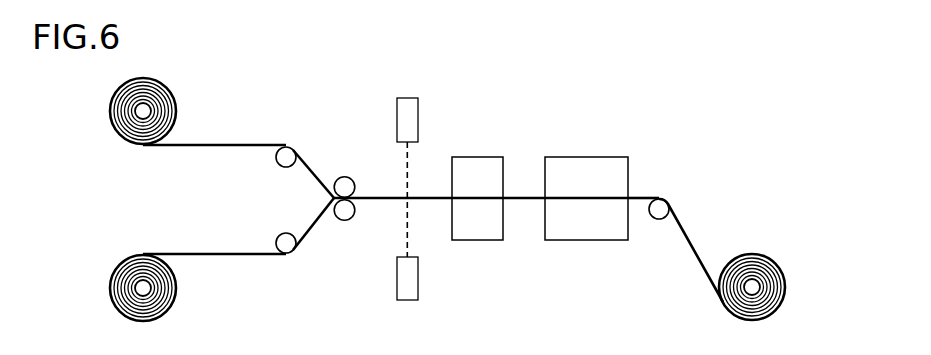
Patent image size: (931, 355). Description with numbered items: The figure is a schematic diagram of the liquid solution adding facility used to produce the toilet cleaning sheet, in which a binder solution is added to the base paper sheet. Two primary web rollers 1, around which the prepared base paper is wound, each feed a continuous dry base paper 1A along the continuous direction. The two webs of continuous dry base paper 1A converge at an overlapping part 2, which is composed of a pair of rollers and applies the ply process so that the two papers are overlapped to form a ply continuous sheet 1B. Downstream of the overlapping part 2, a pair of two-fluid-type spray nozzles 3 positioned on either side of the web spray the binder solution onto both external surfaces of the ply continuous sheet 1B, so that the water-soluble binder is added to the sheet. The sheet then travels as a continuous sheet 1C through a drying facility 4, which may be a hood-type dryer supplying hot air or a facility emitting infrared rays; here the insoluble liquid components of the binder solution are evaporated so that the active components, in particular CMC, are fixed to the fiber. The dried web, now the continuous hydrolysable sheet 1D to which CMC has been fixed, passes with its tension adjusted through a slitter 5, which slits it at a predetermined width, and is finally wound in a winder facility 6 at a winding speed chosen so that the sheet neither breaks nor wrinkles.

The primary web roller 1 is at (116, 100).
The continuous dry base paper 1A is at (188, 144).
The ply continuous sheet 1B is at (375, 197).
The continuous sheet 1C is at (421, 197).
The continuous hydrolysable sheet 1D is at (512, 197).
The overlapping part 2 is at (347, 178).
The two-fluid-type spray nozzle 3 is at (419, 117).
The drying facility 4 is at (470, 157).
The slitter 5 is at (564, 157).
The winder facility 6 is at (753, 286).